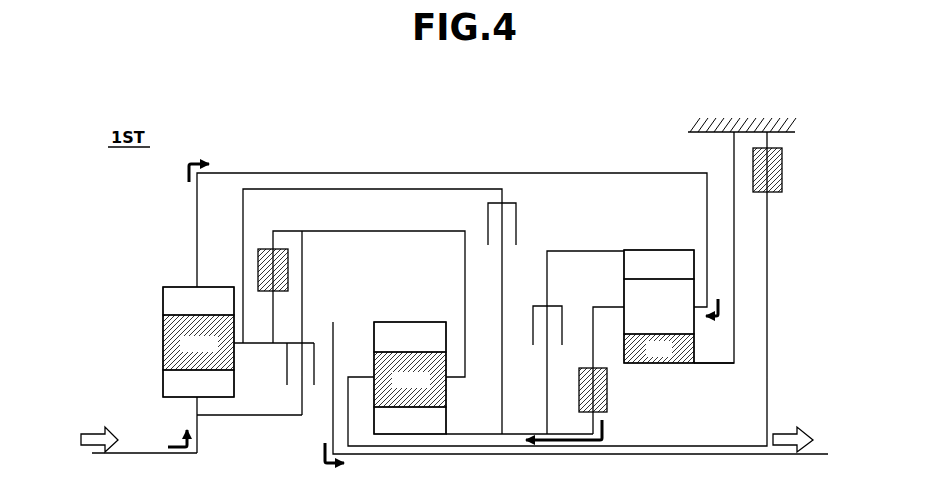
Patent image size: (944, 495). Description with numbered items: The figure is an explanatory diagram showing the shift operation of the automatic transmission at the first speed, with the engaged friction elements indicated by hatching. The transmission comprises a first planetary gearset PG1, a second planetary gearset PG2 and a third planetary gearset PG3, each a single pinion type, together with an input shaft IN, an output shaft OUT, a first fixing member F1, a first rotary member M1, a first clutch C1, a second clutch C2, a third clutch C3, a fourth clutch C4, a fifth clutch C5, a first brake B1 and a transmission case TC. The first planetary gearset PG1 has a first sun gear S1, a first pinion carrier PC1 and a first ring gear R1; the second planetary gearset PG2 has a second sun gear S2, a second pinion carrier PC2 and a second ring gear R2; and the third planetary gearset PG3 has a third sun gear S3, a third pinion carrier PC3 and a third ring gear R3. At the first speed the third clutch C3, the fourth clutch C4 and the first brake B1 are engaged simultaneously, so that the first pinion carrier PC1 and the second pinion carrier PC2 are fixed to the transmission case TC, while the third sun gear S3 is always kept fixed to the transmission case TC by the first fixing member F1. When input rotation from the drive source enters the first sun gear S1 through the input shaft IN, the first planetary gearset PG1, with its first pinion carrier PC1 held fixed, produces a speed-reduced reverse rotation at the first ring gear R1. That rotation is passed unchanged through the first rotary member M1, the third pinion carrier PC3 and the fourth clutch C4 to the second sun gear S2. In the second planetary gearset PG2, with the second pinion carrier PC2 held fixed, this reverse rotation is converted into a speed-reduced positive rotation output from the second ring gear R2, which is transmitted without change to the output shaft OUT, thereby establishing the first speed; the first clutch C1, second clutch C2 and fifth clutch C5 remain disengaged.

The first planetary gearset PG1 is at (172, 276).
The first ring gear R1 is at (198, 301).
The first pinion carrier PC1 is at (238, 342).
The first sun gear S1 is at (198, 383).
The second planetary gearset PG2 is at (400, 312).
The second ring gear R2 is at (410, 337).
The second pinion carrier PC2 is at (557, 319).
The second sun gear S2 is at (410, 420).
The third planetary gearset PG3 is at (651, 242).
The third ring gear R3 is at (659, 264).
The third pinion carrier PC3 is at (659, 306).
The third sun gear S3 is at (679, 348).
The first clutch C1 is at (287, 371).
The second clutch C2 is at (515, 224).
The third clutch C3 is at (278, 296).
The fourth clutch C4 is at (607, 370).
The fifth clutch C5 is at (578, 342).
The first brake B1 is at (780, 162).
The first fixing member F1 is at (717, 365).
The first rotary member M1 is at (410, 173).
The transmission case TC is at (700, 133).
The input shaft IN is at (136, 452).
The output shaft OUT is at (820, 452).